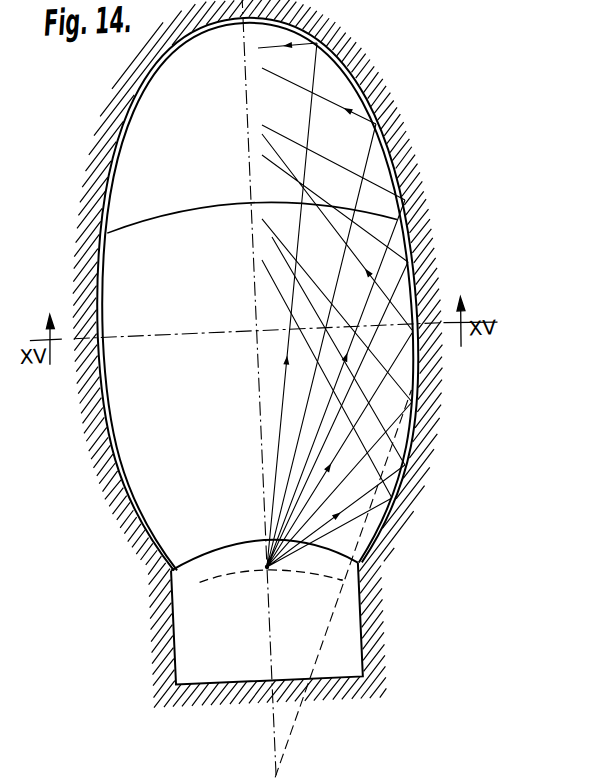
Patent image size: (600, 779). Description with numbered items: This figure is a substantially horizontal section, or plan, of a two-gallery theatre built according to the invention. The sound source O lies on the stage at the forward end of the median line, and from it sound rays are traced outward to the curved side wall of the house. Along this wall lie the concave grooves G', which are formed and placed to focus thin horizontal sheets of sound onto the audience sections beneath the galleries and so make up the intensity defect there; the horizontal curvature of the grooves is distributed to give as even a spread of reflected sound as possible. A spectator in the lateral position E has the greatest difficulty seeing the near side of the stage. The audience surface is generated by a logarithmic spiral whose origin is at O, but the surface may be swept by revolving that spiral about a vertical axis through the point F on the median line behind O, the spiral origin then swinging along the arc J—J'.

The concave groove G' is at (256, 292).
The lateral spectator position E is at (386, 380).
The sound source O is at (333, 312).
The end of arc J—J' J is at (264, 585).
The end of arc J— J' is at (345, 586).
The axis point F is at (344, 584).